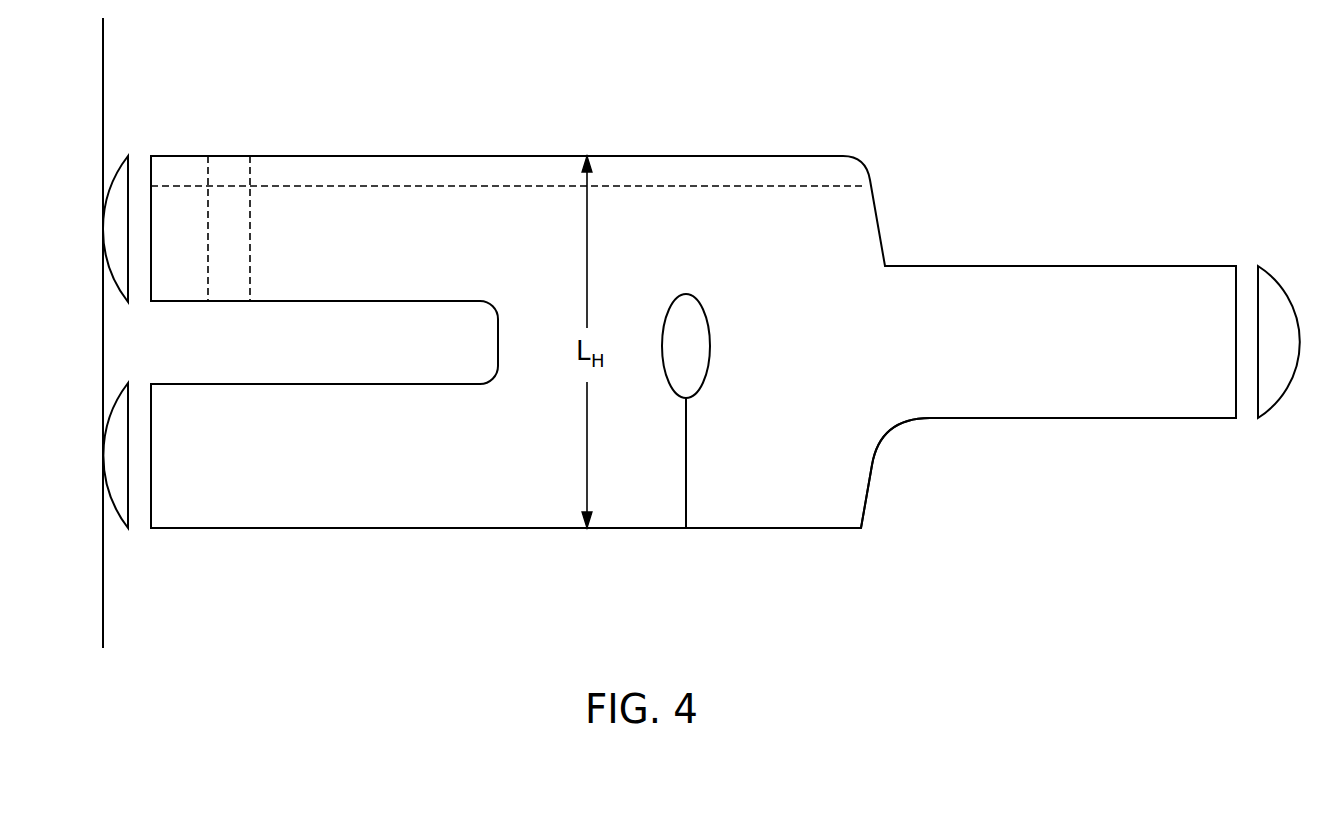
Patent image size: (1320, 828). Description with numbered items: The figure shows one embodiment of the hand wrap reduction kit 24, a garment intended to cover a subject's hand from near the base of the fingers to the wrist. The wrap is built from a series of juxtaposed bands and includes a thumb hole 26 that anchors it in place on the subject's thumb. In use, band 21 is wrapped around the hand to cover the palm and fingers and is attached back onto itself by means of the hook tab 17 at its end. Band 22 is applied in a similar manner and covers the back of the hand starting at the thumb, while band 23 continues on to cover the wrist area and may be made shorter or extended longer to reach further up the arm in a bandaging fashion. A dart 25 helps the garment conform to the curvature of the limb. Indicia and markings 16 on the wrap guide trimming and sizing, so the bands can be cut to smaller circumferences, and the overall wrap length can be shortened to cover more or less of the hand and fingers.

The indicia and markings 16 is at (251, 186).
The hook tab 17 is at (1262, 266).
The band 21 is at (462, 228).
The band 22 is at (1132, 355).
The band 23 is at (270, 445).
The hand wrap reduction kit 24 is at (843, 484).
The dart 25 is at (687, 464).
The thumb hole 26 is at (712, 340).